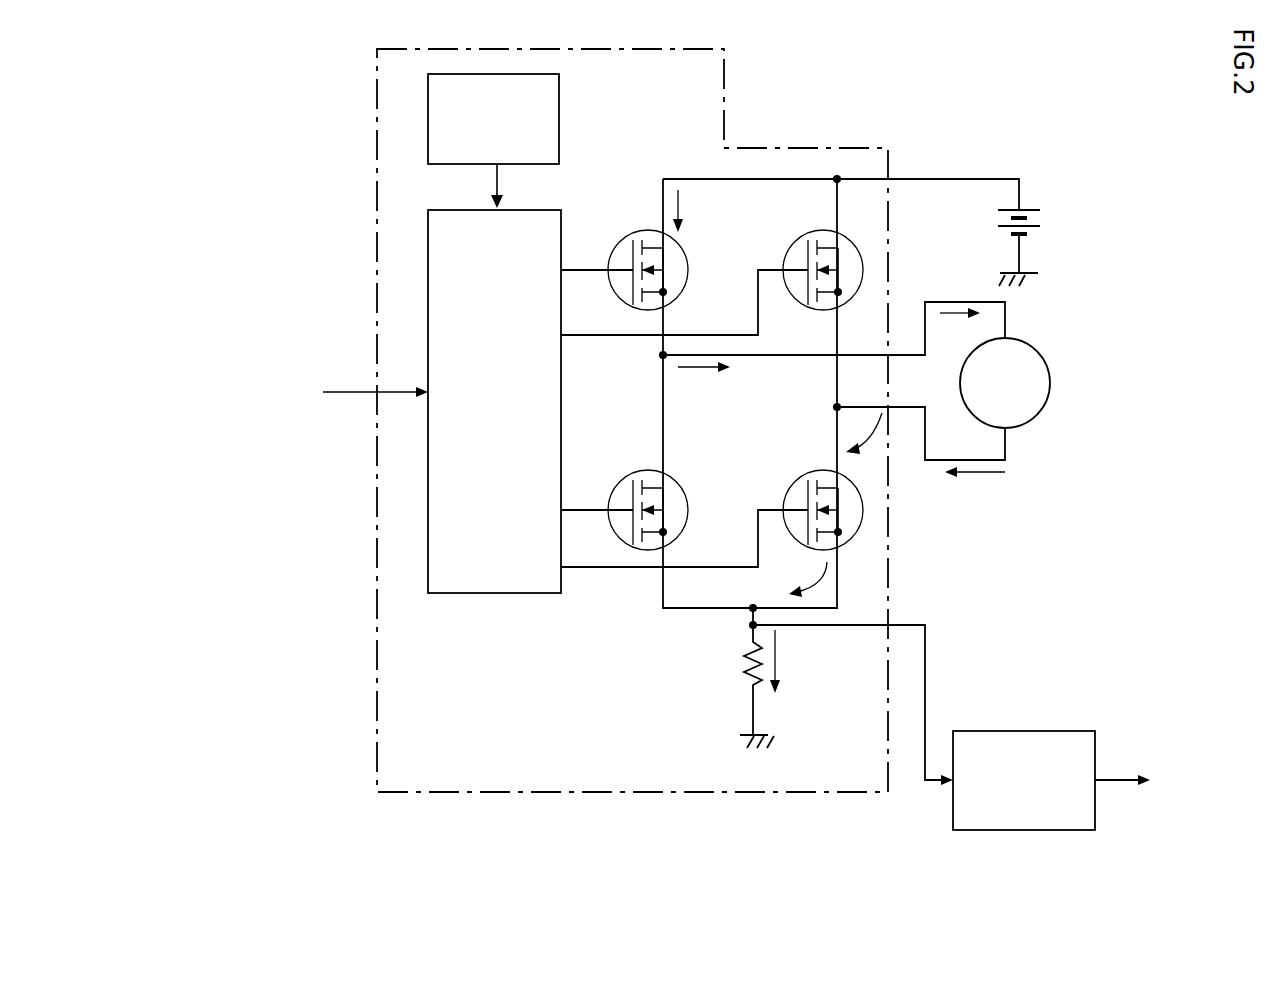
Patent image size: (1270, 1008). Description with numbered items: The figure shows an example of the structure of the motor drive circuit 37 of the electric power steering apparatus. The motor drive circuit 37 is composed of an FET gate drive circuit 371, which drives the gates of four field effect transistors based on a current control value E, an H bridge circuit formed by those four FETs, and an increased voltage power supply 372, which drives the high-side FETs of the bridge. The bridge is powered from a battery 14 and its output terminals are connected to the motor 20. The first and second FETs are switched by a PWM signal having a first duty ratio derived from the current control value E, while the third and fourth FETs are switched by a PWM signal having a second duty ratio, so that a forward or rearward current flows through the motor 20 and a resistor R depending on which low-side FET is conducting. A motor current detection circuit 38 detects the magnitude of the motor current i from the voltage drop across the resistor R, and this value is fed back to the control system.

The battery 14 is at (1032, 207).
The motor 20 is at (1040, 413).
The motor drive circuit 37 is at (683, 792).
The motor current detection circuit 38 is at (1049, 731).
The FET gate drive circuit 371 is at (478, 593).
The increased voltage power supply 372 is at (558, 116).